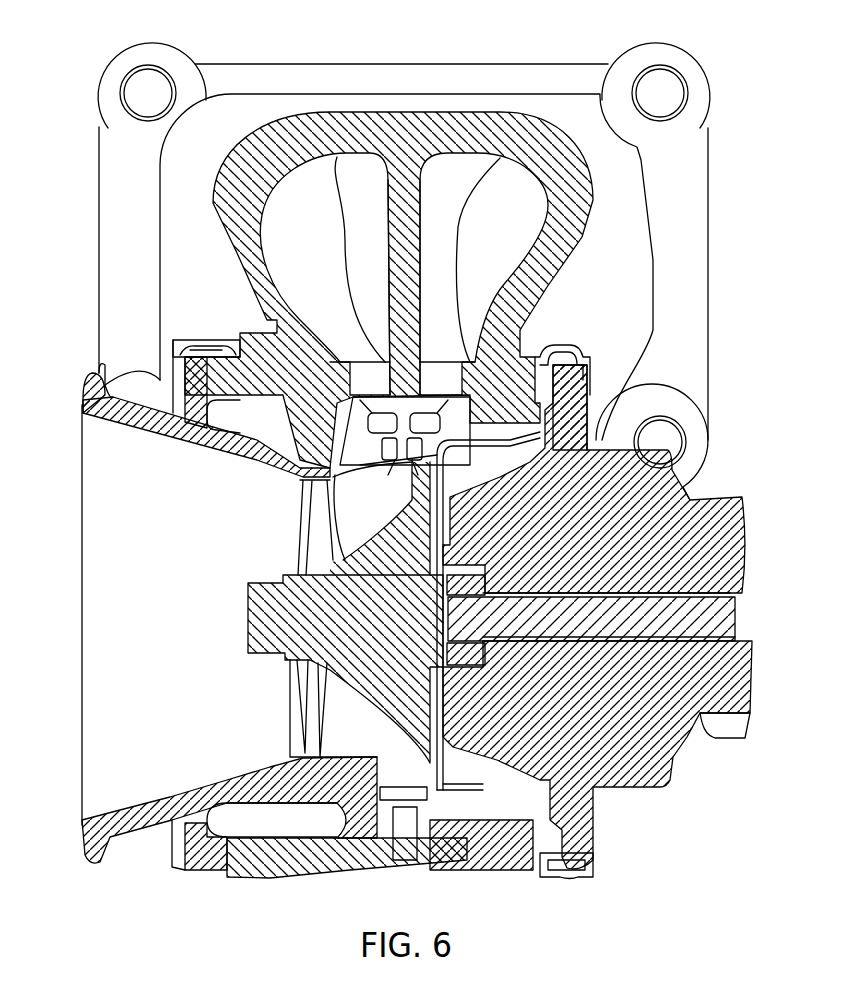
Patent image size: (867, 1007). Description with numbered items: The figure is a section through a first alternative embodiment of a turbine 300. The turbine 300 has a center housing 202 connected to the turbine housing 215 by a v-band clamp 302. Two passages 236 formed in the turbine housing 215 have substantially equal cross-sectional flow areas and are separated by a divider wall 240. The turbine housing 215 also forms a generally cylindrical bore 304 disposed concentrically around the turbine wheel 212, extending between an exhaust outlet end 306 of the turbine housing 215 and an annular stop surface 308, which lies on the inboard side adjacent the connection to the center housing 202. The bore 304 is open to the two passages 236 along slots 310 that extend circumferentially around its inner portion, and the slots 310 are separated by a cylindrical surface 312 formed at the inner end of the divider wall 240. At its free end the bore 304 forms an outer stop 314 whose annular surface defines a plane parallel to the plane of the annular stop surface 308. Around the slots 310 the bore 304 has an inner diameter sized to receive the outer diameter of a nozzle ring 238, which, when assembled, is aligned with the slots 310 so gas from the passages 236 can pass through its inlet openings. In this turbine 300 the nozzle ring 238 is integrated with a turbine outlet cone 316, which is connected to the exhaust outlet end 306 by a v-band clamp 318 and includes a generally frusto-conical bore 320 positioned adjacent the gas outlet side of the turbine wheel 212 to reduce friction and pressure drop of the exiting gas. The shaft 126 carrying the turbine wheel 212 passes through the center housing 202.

The turbine 300 is at (747, 82).
The turbine housing 215 is at (502, 135).
The passages 236 is at (323, 247).
The divider wall 240 is at (400, 240).
The slots 310 is at (385, 391).
The cylindrical surface 312 is at (393, 420).
The turbine wheel 212 is at (268, 645).
The annular stop surface 308 is at (463, 422).
The v-band clamp 302 is at (560, 362).
The center housing 202 is at (640, 768).
The shaft 126 is at (727, 624).
The cylindrical bore 304 is at (270, 442).
The outer stop 314 is at (215, 392).
The v-band clamp 318 is at (205, 344).
The exhaust outlet end 306 is at (120, 338).
The turbine outlet cone 316 is at (96, 726).
The frusto-conical bore 320 is at (176, 588).
The nozzle ring 238 is at (405, 832).